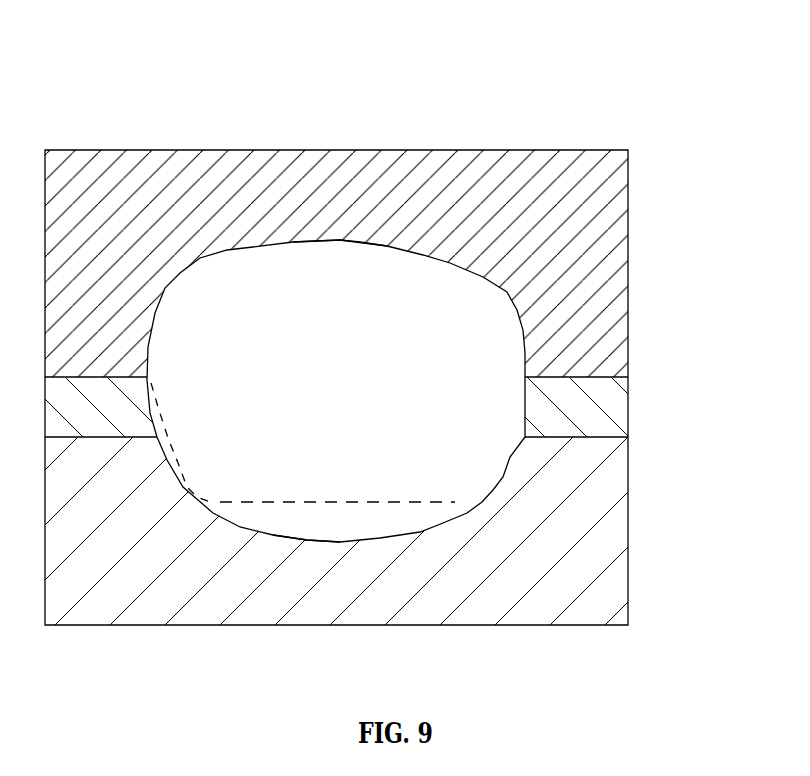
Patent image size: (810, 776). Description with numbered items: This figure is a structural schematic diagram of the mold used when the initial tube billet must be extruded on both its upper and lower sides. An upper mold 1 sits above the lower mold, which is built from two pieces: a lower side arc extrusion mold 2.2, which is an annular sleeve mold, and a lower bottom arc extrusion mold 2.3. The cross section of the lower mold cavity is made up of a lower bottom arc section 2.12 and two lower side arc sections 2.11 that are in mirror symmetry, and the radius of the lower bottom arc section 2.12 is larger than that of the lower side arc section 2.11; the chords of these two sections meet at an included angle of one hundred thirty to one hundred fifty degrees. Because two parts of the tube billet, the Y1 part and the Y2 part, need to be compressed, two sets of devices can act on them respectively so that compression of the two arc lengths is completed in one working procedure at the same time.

The upper mold 1 is at (498, 187).
The lower side arc extrusion mold 2.2 is at (587, 410).
The lower bottom arc extrusion mold 2.3 is at (607, 533).
The lower side arc section 2.11 is at (510, 438).
The lower bottom arc section 2.12 is at (378, 529).
The Y1 part Y1 is at (339, 243).
The Y2 part Y2 is at (302, 542).